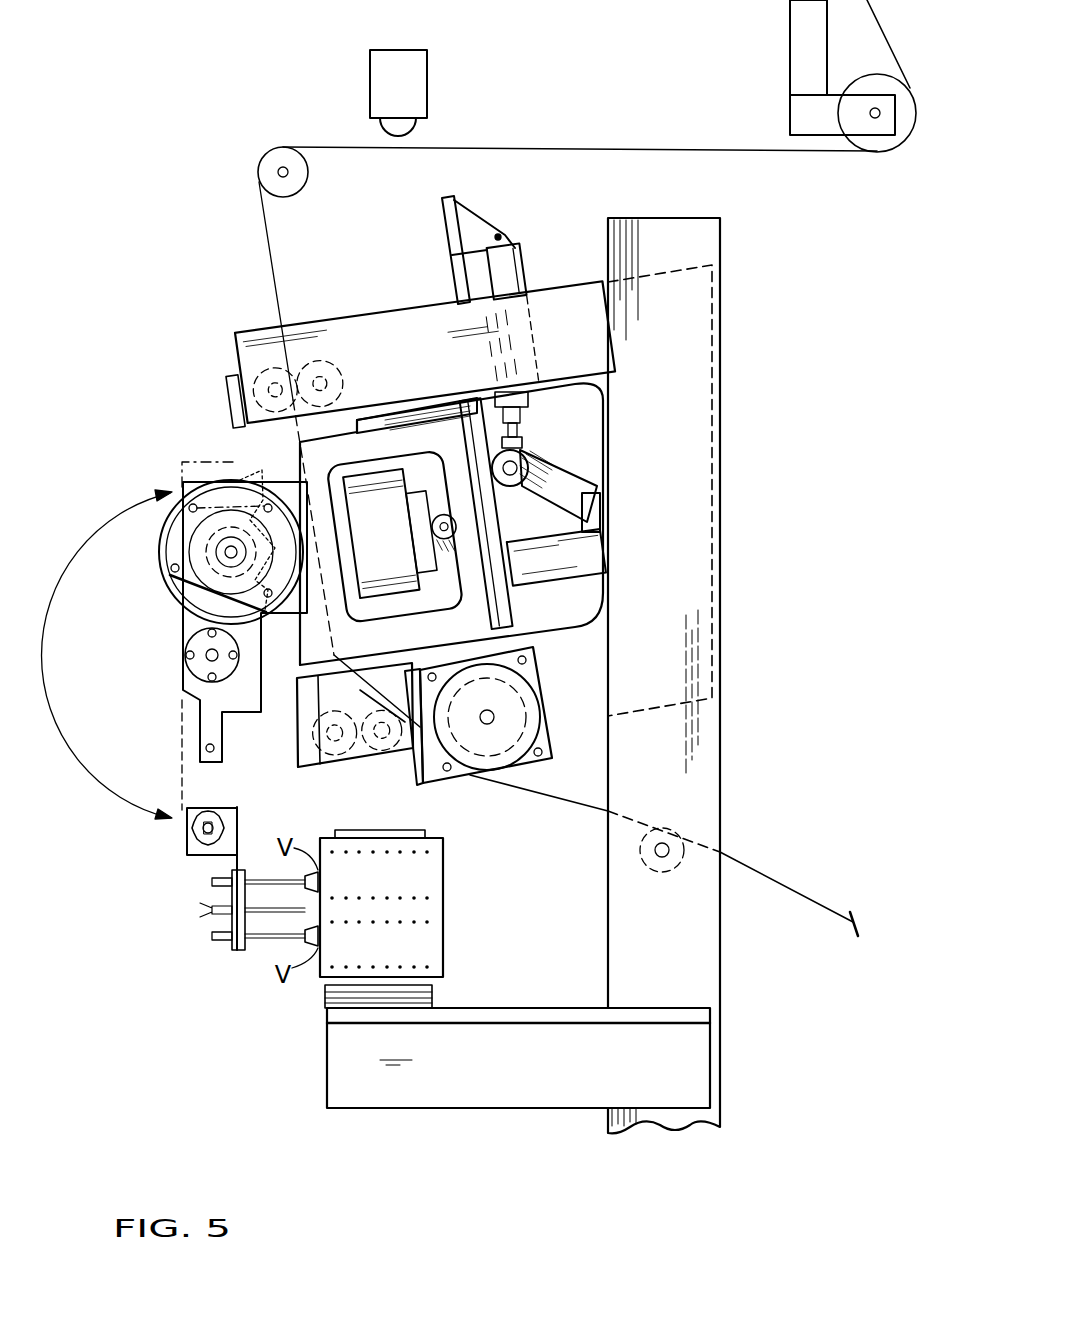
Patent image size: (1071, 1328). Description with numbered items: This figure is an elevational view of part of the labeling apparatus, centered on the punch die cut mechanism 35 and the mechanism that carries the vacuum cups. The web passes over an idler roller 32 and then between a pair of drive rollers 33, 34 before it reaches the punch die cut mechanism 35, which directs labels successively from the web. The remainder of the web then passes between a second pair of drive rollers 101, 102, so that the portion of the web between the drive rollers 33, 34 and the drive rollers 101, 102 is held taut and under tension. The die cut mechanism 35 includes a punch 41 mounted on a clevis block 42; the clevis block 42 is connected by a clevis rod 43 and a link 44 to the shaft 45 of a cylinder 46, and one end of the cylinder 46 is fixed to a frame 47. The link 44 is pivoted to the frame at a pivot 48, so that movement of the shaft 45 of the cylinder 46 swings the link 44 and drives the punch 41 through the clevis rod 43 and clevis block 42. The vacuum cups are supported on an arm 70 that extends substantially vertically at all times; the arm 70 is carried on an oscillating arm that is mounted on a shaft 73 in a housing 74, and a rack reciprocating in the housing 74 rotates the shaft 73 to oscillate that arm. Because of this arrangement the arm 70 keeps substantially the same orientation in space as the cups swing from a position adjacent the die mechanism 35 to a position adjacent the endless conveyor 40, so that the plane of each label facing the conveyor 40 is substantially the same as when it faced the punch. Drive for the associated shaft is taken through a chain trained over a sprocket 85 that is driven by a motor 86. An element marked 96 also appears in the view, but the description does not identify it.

The idler roller 32 is at (270, 172).
The drive roller 33 is at (328, 386).
The drive roller 34 is at (240, 362).
The punch die cut mechanism 35 is at (356, 322).
The endless conveyor 40 is at (446, 893).
The punch 41 is at (378, 484).
The clevis block 42 is at (408, 496).
The clevis rod 43 is at (537, 483).
The link 44 is at (565, 511).
The shaft 45 is at (522, 428).
The cylinder 46 is at (528, 264).
The frame 47 is at (447, 232).
The pivot 48 is at (575, 556).
The arm 70 is at (233, 877).
The shaft 73 is at (200, 856).
The housing 74 is at (190, 836).
The sprocket 85 is at (530, 706).
The motor 86 is at (550, 748).
The drive belt 96 is at (388, 700).
The drive roller 101 is at (408, 750).
The drive roller 102 is at (330, 762).